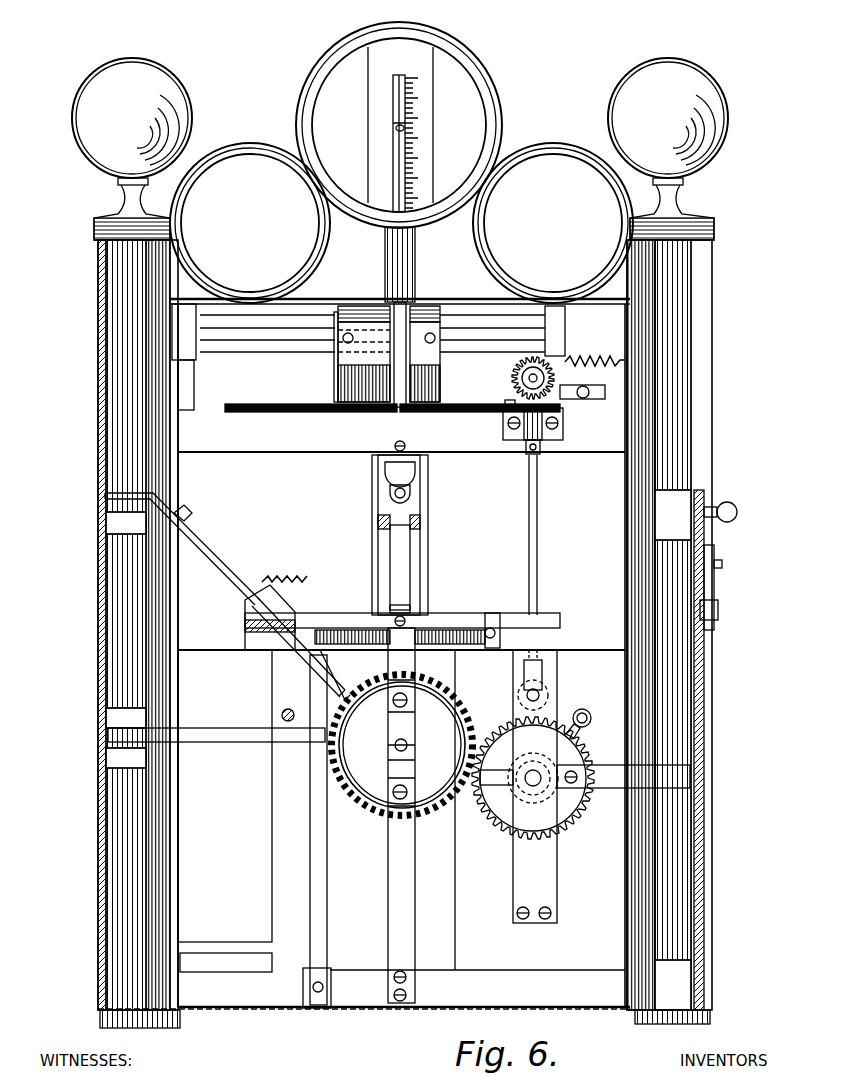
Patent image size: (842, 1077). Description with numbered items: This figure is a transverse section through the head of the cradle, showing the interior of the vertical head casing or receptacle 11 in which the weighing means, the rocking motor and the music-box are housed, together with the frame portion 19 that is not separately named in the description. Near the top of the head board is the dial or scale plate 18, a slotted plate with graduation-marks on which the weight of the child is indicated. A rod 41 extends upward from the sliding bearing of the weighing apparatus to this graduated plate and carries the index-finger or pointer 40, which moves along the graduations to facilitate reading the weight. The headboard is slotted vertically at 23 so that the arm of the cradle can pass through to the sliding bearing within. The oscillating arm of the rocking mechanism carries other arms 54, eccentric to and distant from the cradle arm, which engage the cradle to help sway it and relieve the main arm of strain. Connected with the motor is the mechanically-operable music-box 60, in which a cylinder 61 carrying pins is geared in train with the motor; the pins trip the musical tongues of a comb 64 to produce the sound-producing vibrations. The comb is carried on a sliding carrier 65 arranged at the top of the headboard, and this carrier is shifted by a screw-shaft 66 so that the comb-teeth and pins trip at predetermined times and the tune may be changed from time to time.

The dial or scale plate 18 is at (425, 97).
The index-finger or pointer 40 is at (404, 126).
The rod 41 is at (400, 175).
The screw-shaft 66 is at (362, 304).
The sliding carrier 65 is at (462, 306).
The frame 19 is at (364, 654).
The comb 64 is at (336, 368).
The cylinder 61 is at (296, 404).
The music-box 60 is at (541, 405).
The head casing or receptacle 11 is at (227, 617).
The arms 54 is at (392, 515).
The vertical slot 23 is at (430, 545).